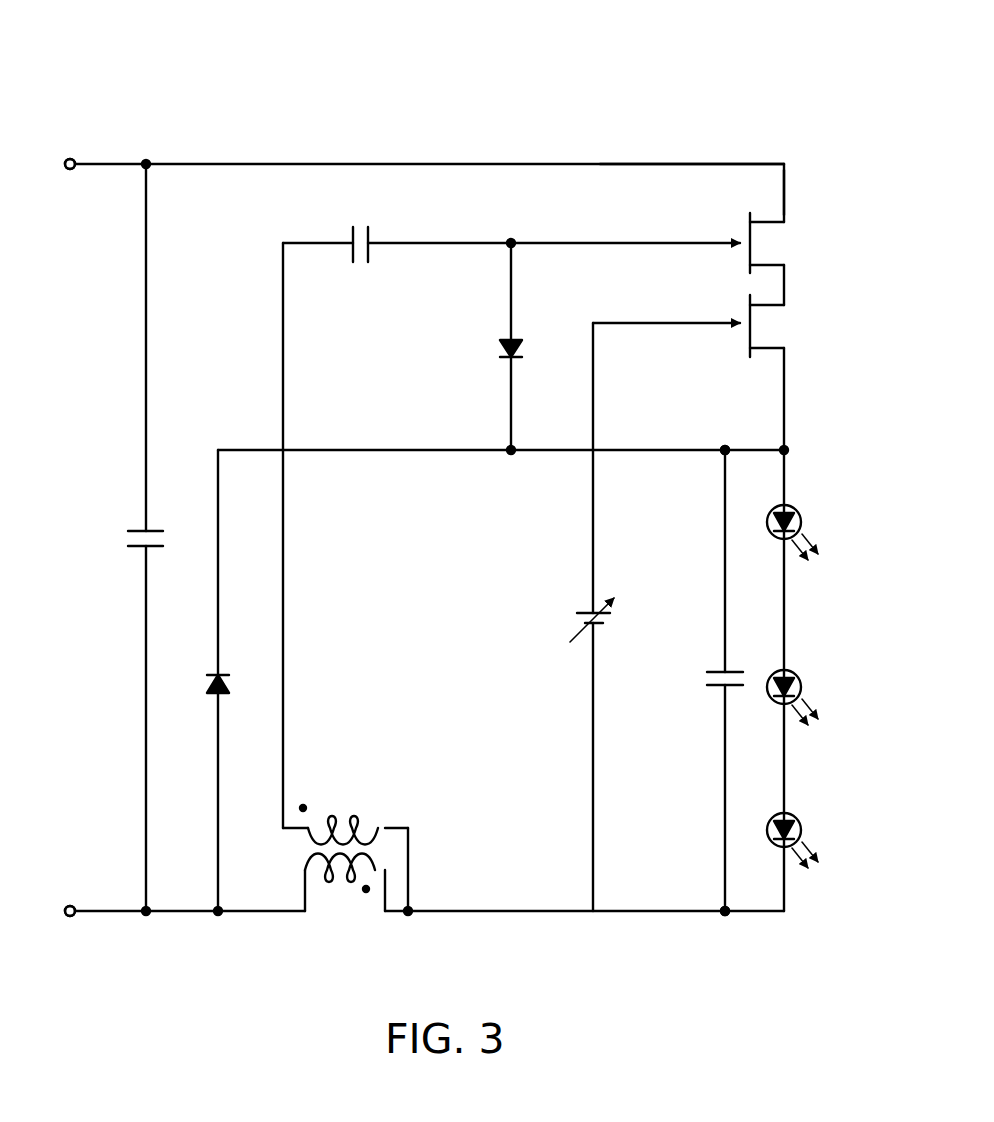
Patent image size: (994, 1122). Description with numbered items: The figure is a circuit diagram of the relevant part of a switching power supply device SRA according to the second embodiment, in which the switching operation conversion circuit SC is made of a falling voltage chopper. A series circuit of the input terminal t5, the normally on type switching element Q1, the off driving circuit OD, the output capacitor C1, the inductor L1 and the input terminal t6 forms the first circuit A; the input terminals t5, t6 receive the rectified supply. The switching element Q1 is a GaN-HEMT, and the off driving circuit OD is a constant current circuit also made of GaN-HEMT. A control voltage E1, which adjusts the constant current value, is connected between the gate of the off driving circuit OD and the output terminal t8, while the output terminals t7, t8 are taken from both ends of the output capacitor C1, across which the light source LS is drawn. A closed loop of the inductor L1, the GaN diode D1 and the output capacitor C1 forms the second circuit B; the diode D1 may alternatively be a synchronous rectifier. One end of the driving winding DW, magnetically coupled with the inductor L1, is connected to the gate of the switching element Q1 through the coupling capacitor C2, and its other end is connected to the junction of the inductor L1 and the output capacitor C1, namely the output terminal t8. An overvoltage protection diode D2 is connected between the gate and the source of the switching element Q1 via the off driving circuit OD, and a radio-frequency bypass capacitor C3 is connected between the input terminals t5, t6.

The self-excited resonant circuit / lighting device SRA is at (397, 50).
The switching operation conversion circuit SC is at (583, 185).
The first circuit A is at (777, 190).
The second circuit B is at (232, 508).
The normally on type switching element Q1 is at (762, 244).
The off driving circuit OD is at (762, 331).
The output capacitor C1 is at (706, 678).
The coupling capacitor C2 is at (365, 263).
The radio-frequency bypass capacitor C3 is at (128, 540).
The diode D1 is at (228, 688).
The overvoltage protection diode D2 is at (497, 343).
The control voltage E1 is at (572, 618).
The driving winding DW is at (345, 806).
The inductor L1 is at (352, 885).
The light source (LEDs) LS is at (800, 513).
The input terminal t5 is at (70, 170).
The input terminal t6 is at (70, 917).
The output terminal t7 is at (725, 448).
The output terminal t8 is at (727, 918).